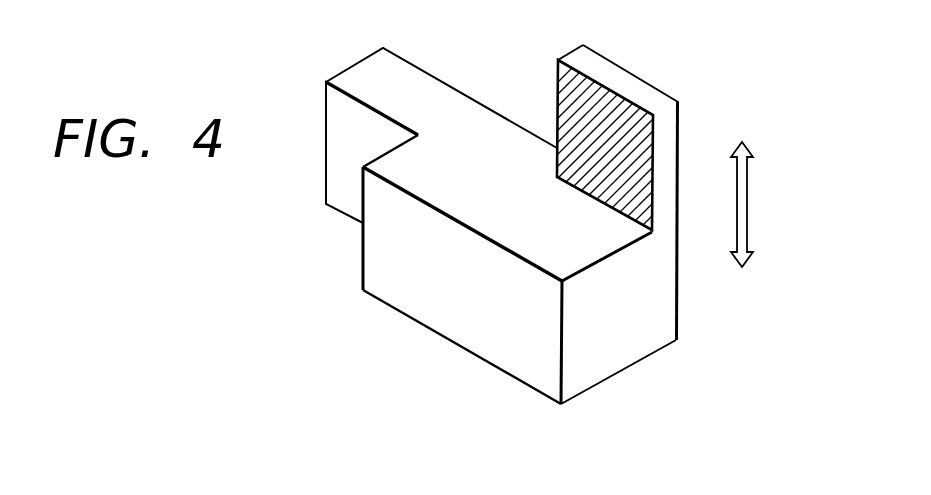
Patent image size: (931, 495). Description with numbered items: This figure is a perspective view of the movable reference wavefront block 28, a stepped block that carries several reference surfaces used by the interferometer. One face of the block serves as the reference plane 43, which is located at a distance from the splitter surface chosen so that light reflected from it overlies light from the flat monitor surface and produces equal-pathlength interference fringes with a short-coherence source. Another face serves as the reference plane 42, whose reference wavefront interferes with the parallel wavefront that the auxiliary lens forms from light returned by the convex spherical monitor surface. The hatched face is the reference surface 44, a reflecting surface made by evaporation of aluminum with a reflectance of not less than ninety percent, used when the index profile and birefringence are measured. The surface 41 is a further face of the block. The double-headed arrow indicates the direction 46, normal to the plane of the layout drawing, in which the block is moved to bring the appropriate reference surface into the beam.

The movable reference wavefront block 28 is at (472, 105).
The left side surface 41 is at (334, 166).
The reference plane 42 is at (402, 302).
The reference plane 43 is at (495, 332).
The reference surface 44 is at (630, 105).
The direction of movement 46 is at (745, 198).